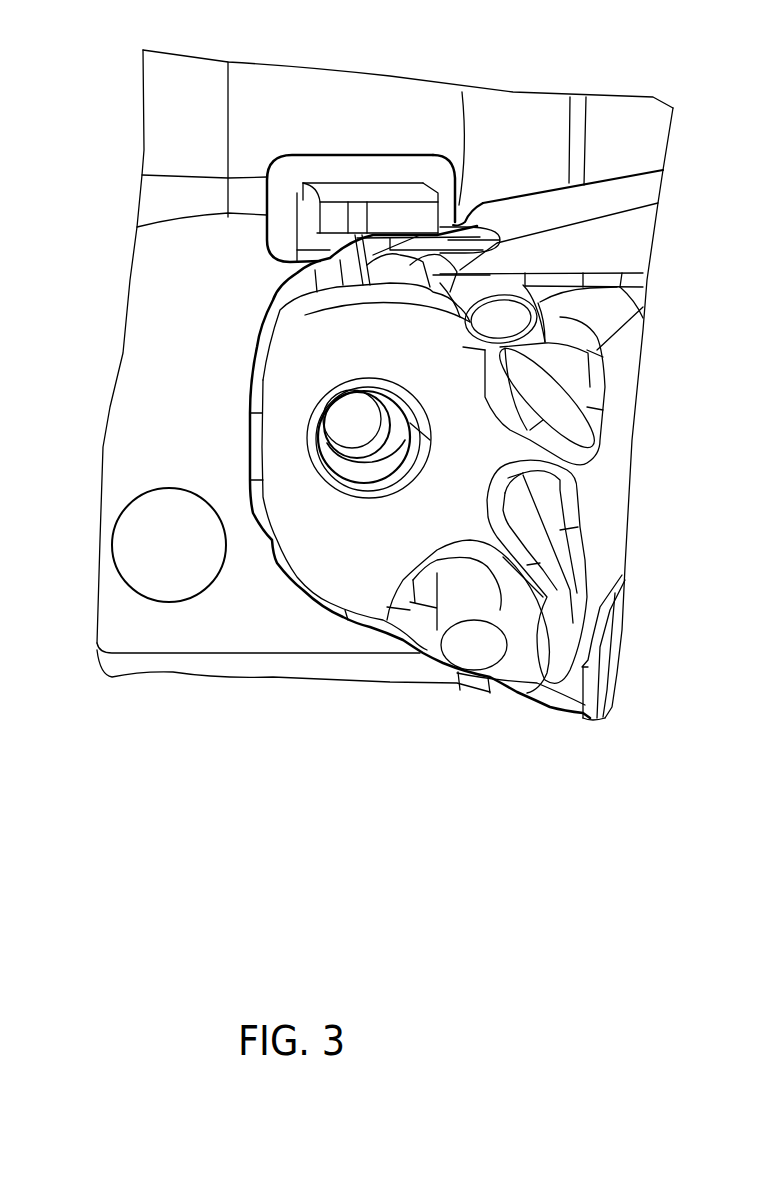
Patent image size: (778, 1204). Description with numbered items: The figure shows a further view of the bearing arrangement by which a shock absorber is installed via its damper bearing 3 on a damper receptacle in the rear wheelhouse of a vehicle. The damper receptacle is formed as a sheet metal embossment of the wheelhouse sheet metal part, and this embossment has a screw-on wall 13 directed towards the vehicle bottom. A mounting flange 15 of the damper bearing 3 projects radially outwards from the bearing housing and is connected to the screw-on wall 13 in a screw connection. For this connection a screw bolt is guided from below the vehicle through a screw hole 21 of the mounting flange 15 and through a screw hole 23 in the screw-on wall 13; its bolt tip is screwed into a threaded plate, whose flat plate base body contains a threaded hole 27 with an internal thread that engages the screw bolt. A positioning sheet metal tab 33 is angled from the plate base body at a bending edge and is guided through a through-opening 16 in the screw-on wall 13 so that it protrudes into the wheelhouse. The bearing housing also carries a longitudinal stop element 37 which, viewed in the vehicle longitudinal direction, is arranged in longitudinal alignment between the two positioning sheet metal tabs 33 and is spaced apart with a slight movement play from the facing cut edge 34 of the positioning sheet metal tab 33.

The damper bearing 3 is at (618, 477).
The screw-on wall 13 is at (191, 439).
The mounting flange 15 is at (292, 387).
The through-opening 16 is at (348, 156).
The screw hole 21 is at (352, 492).
The screw hole 23 is at (378, 479).
The threaded hole 27 is at (348, 454).
The positioning sheet metal tab 33 is at (383, 187).
The cut edge 34 is at (436, 192).
The longitudinal stop element 37 is at (553, 206).